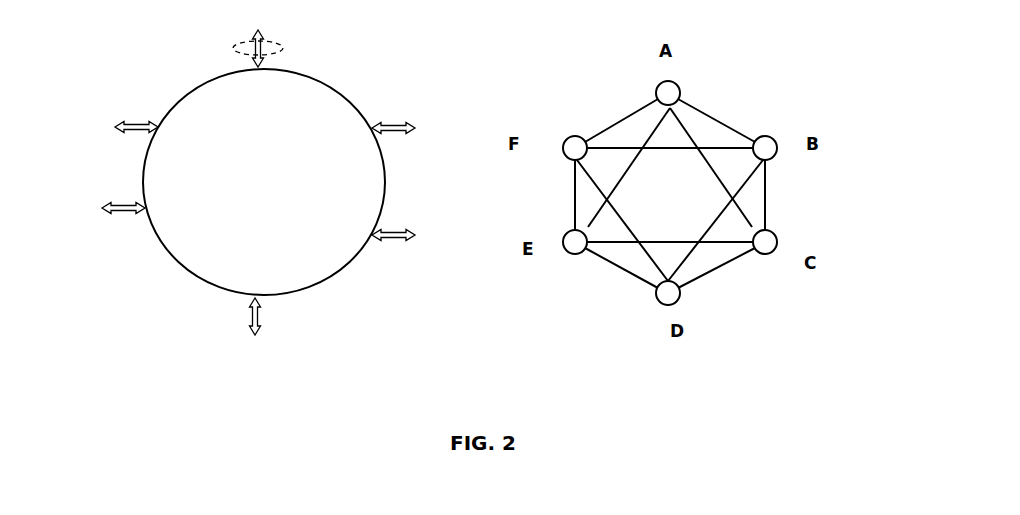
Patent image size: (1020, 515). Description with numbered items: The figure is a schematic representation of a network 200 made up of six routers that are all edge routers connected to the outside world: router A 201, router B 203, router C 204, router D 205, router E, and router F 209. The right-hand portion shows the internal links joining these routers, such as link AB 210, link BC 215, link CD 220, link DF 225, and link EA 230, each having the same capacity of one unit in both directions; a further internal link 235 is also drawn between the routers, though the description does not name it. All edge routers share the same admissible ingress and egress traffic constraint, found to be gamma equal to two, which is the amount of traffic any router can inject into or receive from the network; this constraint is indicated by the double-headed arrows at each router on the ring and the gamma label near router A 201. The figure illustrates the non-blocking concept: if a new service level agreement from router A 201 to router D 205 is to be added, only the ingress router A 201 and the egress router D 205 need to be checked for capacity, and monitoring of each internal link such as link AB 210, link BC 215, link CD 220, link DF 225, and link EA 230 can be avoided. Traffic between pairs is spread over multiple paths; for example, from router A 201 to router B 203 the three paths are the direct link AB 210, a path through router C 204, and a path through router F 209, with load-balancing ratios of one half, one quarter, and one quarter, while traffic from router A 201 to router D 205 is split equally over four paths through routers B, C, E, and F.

The network 200 is at (224, 321).
The router A 201 is at (273, 88).
The router B 203 is at (412, 132).
The router C 204 is at (414, 230).
The router D 205 is at (266, 291).
The router F 209 is at (177, 113).
The link AB 210 is at (727, 114).
The link BC 215 is at (771, 199).
The link CD 220 is at (733, 279).
The link DF 225 is at (623, 231).
The link EA 230 is at (650, 132).
The link A-C 235 is at (698, 135).